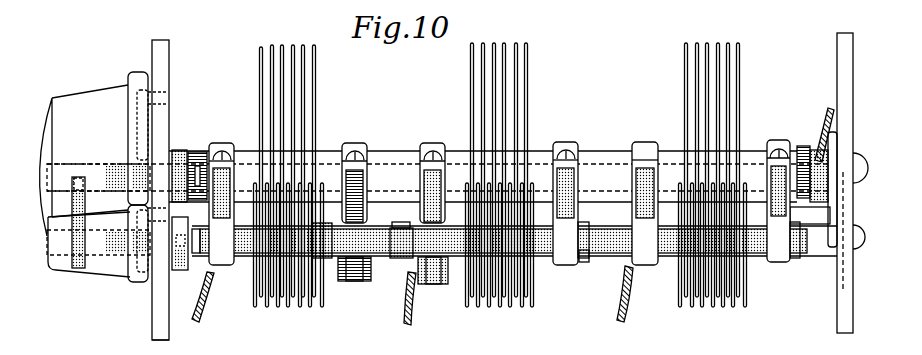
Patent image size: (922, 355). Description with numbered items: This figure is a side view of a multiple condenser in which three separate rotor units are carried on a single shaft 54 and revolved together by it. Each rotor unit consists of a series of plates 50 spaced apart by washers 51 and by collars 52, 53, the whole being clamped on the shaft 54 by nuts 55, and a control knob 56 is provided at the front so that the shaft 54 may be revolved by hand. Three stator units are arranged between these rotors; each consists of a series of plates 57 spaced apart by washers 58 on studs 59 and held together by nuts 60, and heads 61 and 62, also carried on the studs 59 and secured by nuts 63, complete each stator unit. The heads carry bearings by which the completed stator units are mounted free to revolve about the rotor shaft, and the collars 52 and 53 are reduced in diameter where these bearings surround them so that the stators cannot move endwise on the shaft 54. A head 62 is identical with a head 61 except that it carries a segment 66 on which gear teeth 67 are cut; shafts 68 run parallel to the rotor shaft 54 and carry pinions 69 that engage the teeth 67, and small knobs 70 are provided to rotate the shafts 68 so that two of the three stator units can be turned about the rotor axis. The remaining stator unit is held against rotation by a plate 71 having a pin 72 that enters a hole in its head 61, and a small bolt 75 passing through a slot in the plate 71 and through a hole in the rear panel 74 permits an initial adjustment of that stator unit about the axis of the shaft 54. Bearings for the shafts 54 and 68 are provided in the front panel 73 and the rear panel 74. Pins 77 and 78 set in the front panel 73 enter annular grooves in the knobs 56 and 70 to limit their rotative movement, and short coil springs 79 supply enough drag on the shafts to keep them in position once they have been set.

The plates 50 is at (272, 45).
The washers 51 is at (289, 45).
The collar 52 is at (246, 150).
The collar 53 is at (390, 150).
The shaft 54 is at (538, 165).
The nuts 55 is at (193, 150).
The control knob 56 is at (85, 95).
The plates 57 is at (287, 309).
The washers 58 is at (298, 309).
The studs 59 is at (225, 252).
The nuts 60 is at (588, 262).
The head 61 is at (233, 165).
The head 62 is at (420, 164).
The nuts 63 is at (590, 230).
The segment 66 is at (367, 270).
The gear teeth 67 is at (354, 276).
The shafts 68 is at (66, 250).
The pinions 69 is at (338, 262).
The small knobs 70 is at (97, 273).
The plate 71 is at (831, 130).
The pin 72 is at (825, 215).
The front panel 73 is at (152, 337).
The rear panel 74 is at (838, 333).
The small bolt 75 is at (843, 288).
The pin 77 is at (161, 92).
The pin 78 is at (161, 212).
The coil springs 79 is at (110, 228).